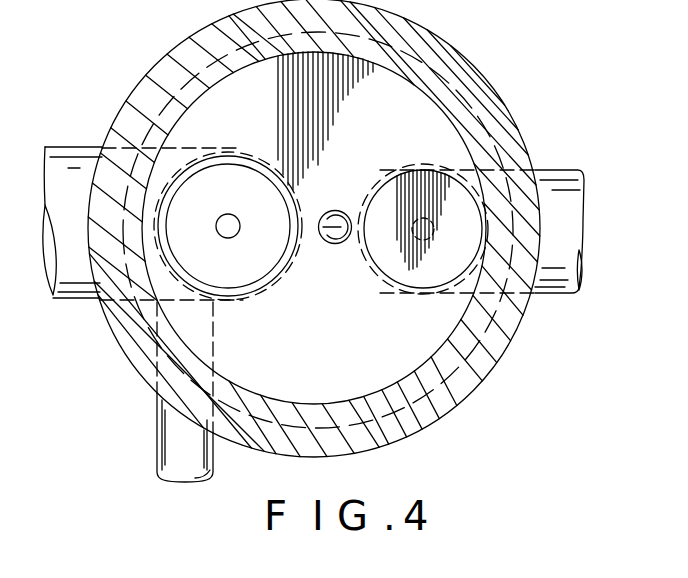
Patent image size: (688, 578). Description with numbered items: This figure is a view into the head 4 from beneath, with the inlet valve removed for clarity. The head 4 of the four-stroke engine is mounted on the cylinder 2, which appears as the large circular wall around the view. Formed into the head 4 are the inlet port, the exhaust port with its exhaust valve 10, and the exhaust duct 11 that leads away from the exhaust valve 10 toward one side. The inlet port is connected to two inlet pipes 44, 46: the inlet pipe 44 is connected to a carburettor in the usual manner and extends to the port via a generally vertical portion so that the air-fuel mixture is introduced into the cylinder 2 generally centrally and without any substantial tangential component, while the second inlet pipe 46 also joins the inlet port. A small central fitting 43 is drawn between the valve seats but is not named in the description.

The cylinder 2 is at (467, 78).
The head 4 is at (483, 126).
The exhaust valve 10 is at (430, 275).
The exhaust duct 11 is at (558, 287).
The adjusting screw 43 is at (335, 245).
The inlet pipe 44 is at (84, 294).
The inlet pipe 46 is at (170, 438).